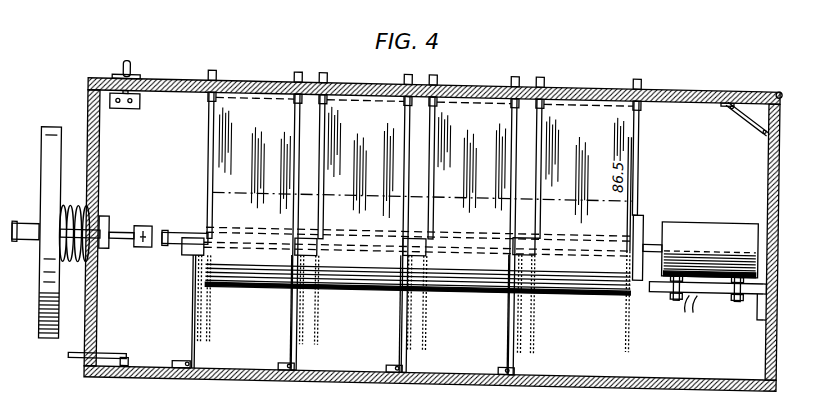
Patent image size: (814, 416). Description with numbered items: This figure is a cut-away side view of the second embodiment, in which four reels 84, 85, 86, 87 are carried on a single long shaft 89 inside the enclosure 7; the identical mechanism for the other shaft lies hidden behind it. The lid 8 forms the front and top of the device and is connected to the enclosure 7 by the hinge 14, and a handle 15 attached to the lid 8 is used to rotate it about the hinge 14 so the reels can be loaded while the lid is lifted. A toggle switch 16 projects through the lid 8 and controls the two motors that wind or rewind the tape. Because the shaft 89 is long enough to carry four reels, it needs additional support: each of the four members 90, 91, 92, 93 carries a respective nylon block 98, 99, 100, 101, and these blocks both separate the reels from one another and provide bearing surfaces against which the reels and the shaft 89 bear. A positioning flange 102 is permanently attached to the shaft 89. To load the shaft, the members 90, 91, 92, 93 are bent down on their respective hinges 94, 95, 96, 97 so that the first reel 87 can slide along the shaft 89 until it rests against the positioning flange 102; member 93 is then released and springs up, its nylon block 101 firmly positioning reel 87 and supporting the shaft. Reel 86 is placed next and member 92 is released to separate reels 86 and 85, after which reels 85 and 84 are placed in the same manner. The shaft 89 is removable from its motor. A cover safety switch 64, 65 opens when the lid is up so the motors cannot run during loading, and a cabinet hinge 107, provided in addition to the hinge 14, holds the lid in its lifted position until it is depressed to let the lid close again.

The enclosure 7 is at (477, 378).
The lid 8 is at (88, 92).
The hinge 14 is at (780, 80).
The handle 15 is at (72, 355).
The toggle switch 16 is at (134, 109).
The cover safety switch 64 is at (111, 353).
The cover safety switch 65 is at (132, 358).
The reel 84 is at (211, 141).
The reel 85 is at (320, 141).
The reel 86 is at (430, 139).
The reel 87 is at (539, 137).
The shaft 89 is at (159, 230).
The member 90 is at (198, 356).
The member 91 is at (305, 357).
The member 92 is at (412, 360).
The member 93 is at (525, 358).
The hinge 94 is at (182, 358).
The hinge 95 is at (286, 359).
The hinge 96 is at (397, 358).
The hinge 97 is at (507, 359).
The nylon block 98 is at (205, 250).
The nylon block 99 is at (316, 251).
The nylon block 100 is at (424, 249).
The nylon block 101 is at (531, 247).
The positioning flange 102 is at (643, 192).
The cabinet hinge 107 is at (756, 115).